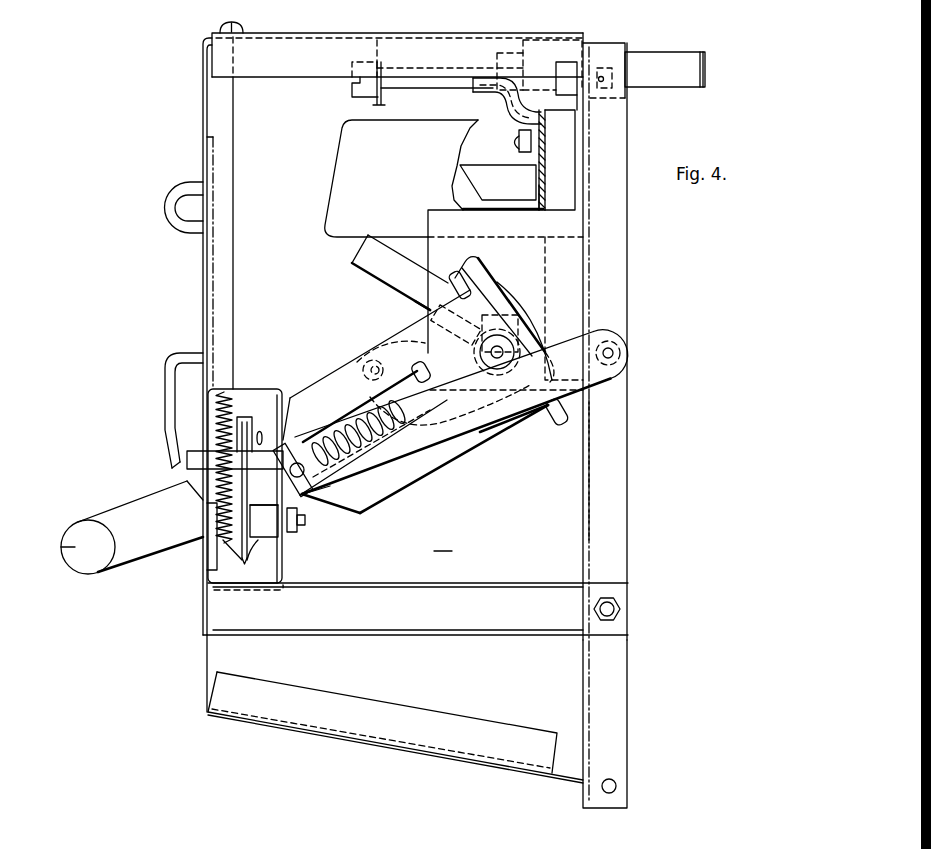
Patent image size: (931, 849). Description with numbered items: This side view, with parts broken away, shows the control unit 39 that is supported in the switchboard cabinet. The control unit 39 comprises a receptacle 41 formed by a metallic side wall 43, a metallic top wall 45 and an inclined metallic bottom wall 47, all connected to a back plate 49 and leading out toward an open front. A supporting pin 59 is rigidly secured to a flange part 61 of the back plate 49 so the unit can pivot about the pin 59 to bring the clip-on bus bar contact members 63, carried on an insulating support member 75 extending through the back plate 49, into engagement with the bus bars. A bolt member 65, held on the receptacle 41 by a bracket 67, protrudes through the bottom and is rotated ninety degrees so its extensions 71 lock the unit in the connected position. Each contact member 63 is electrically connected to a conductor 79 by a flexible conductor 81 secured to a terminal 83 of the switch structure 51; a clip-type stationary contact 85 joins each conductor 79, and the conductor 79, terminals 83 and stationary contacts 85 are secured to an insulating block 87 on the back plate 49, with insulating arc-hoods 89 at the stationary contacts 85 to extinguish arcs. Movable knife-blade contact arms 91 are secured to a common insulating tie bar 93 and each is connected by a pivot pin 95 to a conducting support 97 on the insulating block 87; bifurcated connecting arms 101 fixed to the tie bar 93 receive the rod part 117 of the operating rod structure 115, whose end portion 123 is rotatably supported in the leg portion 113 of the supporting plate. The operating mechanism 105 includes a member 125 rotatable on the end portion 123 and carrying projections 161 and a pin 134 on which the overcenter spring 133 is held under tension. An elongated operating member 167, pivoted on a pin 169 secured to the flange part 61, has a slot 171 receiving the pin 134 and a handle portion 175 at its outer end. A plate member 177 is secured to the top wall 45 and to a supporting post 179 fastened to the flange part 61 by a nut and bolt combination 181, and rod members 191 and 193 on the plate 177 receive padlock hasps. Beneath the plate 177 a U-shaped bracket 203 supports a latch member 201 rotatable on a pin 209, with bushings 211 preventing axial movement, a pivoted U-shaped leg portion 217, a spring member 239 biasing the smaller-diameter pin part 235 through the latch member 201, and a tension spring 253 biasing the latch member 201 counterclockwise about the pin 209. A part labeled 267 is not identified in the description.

The control unit 39 is at (443, 542).
The receptacle 41 is at (588, 522).
The metallic side wall 43 is at (595, 468).
The metallic top wall 45 is at (290, 36).
The inclined metallic bottom wall 47 is at (304, 738).
The back plate 49 is at (628, 296).
The switch structure 51 is at (552, 273).
The supporting pin 59 is at (617, 787).
The flange part 61 is at (620, 705).
The clip-on bus bar contact member 63 is at (661, 62).
The bolt member 65 is at (350, 93).
The bracket 67 is at (385, 92).
The extension 71 is at (601, 74).
The insulating support member 75 is at (558, 46).
The conductor 79 is at (546, 142).
The flexible conductor 81 is at (484, 96).
The terminal 83 is at (519, 142).
The clip-type stationary contact 85 is at (476, 172).
The insulating block 87 is at (577, 172).
The insulating arc-hood 89 is at (350, 142).
The movable knife-blade contact arm 91 is at (362, 249).
The insulating tie bar 93 is at (428, 313).
The pivot pin 95 is at (506, 306).
The conducting support 97 is at (541, 320).
The bifurcated connecting arm 101 is at (370, 359).
The operating mechanism 105 is at (494, 456).
The leg portion 113 is at (432, 218).
The operating rod structure 115 is at (343, 367).
The rod part 117 is at (362, 363).
The end portion 123 is at (500, 369).
The rotatable member 125 is at (410, 477).
The overcenter spring 133 is at (342, 420).
The spring supporting pin 134 is at (322, 487).
The projection 161 is at (456, 274).
The operating member 167 is at (448, 440).
The pin 169 is at (614, 353).
The slot 171 is at (308, 443).
The handle portion 175 is at (73, 547).
The plate member 177 is at (203, 100).
The supporting post 179 is at (212, 610).
The nut and bolt combination 181 is at (615, 608).
The rod member 191 is at (178, 367).
The rod member 193 is at (180, 187).
The latch member 201 is at (255, 530).
The U-shaped bracket 203 is at (284, 572).
The pin 209 is at (306, 521).
The bushing 211 is at (241, 562).
The leg portion 217 is at (257, 428).
The smaller-diameter pin part 235 is at (190, 469).
The spring member 239 is at (262, 494).
The tension spring 253 is at (228, 402).
The recess 267 is at (545, 193).